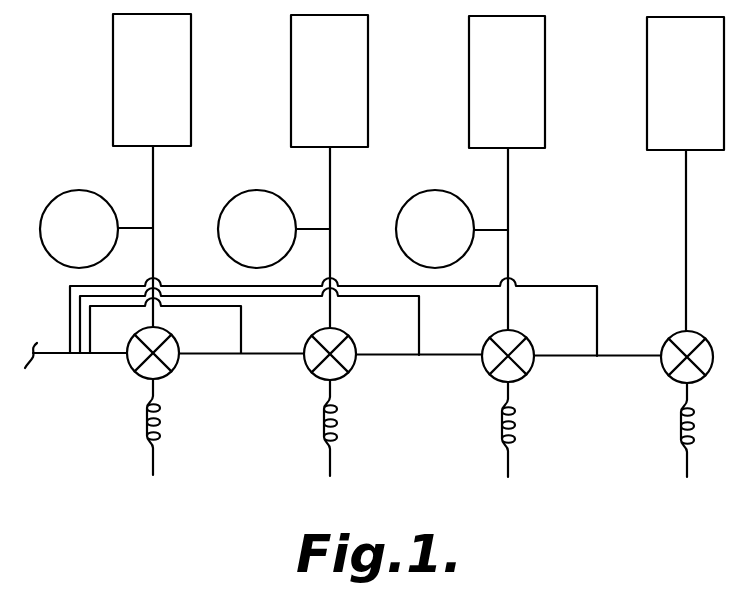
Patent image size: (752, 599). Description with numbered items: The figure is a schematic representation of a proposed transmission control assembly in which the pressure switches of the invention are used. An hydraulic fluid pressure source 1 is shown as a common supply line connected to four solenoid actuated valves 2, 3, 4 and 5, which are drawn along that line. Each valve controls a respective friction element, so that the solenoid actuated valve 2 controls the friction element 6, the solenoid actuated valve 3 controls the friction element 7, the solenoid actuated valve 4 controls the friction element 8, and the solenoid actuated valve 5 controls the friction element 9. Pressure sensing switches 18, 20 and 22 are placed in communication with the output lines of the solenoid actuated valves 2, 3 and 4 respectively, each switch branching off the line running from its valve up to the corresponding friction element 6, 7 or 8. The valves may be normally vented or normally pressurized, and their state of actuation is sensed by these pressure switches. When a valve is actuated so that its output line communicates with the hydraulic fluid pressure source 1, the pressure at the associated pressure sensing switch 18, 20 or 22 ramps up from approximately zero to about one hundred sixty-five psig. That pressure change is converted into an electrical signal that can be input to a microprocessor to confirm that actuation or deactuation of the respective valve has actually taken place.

The hydraulic fluid pressure source 1 is at (57, 355).
The solenoid actuated valve 2 is at (170, 438).
The solenoid actuated valve 3 is at (345, 433).
The solenoid actuated valve 4 is at (520, 431).
The solenoid actuated valve 5 is at (698, 437).
The friction element 6 is at (112, 91).
The friction element 7 is at (290, 92).
The friction element 8 is at (468, 97).
The friction element 9 is at (646, 97).
The pressure sensing switch 18 is at (51, 196).
The pressure sensing switch 20 is at (229, 197).
The pressure sensing switch 22 is at (411, 194).